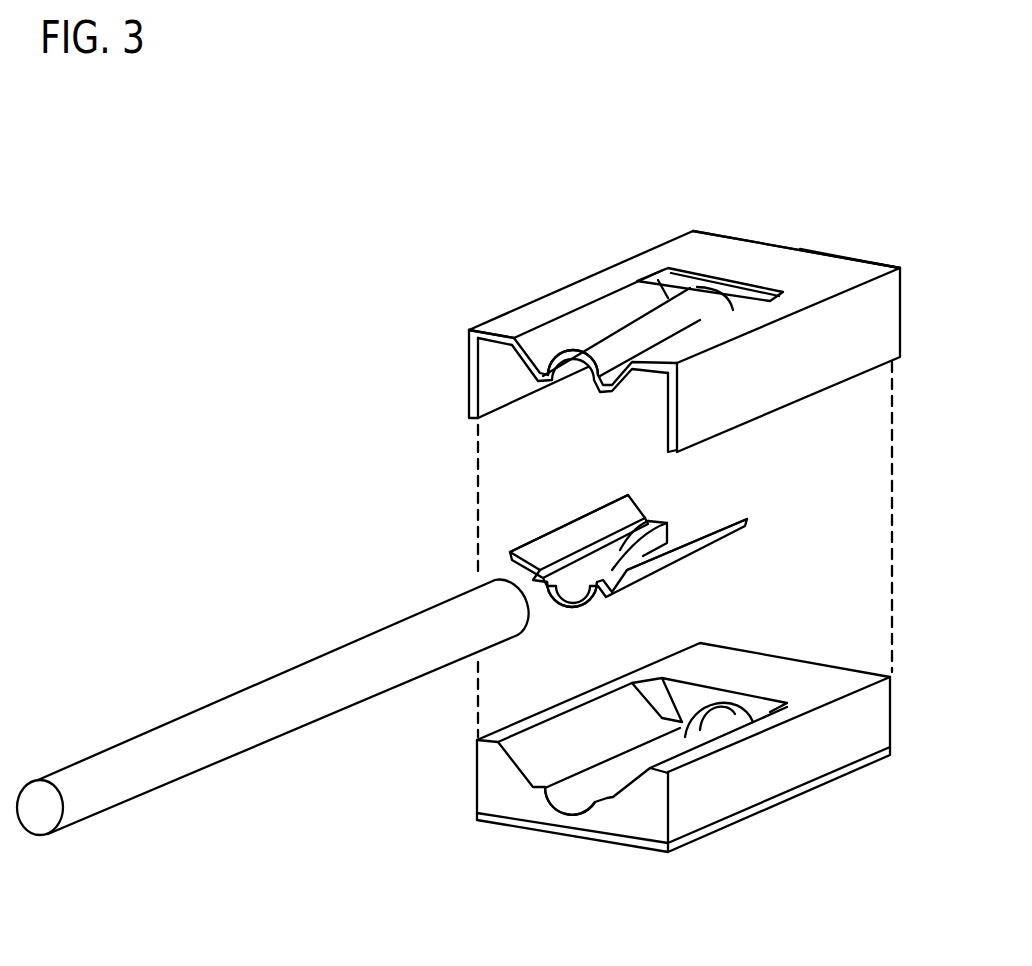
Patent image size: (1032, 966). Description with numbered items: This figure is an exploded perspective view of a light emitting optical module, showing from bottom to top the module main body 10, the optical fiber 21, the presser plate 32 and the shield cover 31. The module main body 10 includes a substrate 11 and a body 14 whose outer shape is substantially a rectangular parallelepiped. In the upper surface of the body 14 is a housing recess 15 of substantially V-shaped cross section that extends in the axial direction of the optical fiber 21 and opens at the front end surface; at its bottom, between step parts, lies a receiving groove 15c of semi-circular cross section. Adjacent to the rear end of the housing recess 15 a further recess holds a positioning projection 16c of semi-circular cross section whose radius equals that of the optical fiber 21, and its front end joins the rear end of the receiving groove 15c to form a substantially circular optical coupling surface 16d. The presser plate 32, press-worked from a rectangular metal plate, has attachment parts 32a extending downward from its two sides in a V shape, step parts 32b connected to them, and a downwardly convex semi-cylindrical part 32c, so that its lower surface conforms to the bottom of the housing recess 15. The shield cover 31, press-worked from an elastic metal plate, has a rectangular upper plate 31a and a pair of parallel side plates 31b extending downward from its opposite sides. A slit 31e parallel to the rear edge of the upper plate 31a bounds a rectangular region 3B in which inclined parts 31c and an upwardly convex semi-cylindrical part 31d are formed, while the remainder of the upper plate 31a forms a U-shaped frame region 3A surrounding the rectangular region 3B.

The U-shaped frame region 3A is at (758, 270).
The rectangular region 3B is at (513, 216).
The module main body 10 is at (713, 837).
The substrate 11 is at (808, 788).
The body 14 is at (827, 675).
The housing recess 15 is at (537, 752).
The receiving groove 15c is at (578, 803).
The positioning projection 16c is at (732, 700).
The optical coupling surface 16d is at (700, 710).
The optical fiber 21 is at (232, 693).
The shield cover 31 is at (498, 310).
The upper plate 31a is at (840, 263).
The side plates 31b is at (468, 380).
The inclined parts 31c is at (573, 323).
The semi-cylindrical part 31d is at (632, 332).
The slit 31e is at (722, 285).
The presser plate 32 is at (515, 540).
The attachment parts 32a is at (565, 537).
The step parts 32b is at (667, 523).
The semi-cylindrical part 32c is at (580, 593).